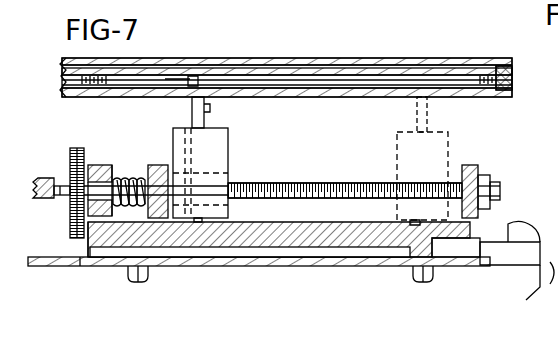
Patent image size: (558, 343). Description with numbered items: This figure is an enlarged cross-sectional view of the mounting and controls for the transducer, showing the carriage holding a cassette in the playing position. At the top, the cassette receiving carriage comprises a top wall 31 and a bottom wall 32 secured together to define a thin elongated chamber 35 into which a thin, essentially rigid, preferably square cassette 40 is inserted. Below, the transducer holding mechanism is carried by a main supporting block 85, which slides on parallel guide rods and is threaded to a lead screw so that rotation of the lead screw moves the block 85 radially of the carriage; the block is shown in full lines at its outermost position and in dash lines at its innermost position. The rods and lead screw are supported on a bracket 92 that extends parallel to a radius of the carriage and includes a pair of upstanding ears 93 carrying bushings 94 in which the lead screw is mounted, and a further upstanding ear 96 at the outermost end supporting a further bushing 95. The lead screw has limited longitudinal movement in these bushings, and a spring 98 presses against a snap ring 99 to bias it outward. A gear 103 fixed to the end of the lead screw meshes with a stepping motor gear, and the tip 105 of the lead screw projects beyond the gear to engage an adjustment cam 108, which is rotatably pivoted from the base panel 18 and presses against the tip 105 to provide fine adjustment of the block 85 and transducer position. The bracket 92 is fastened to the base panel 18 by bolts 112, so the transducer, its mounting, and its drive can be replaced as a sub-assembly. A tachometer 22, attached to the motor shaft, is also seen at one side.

The top wall 31 is at (486, 59).
The chamber 35 is at (66, 74).
The cassette 40 is at (508, 70).
The bottom wall 32 is at (499, 97).
The bracket 92 is at (254, 237).
The base panel 18 is at (326, 266).
The gear 103 is at (96, 237).
The upstanding ear 96 is at (90, 250).
The bolts 112 is at (138, 282).
The upstanding ears 93 is at (165, 182).
The main supporting block 85 is at (210, 147).
The bushings 94 is at (156, 176).
The snap ring 99 is at (113, 170).
The spring 98 is at (129, 178).
The bushing 95 is at (96, 166).
The tip 105 is at (68, 195).
The adjustment cam 108 is at (43, 178).
The tachometer 22 is at (520, 233).